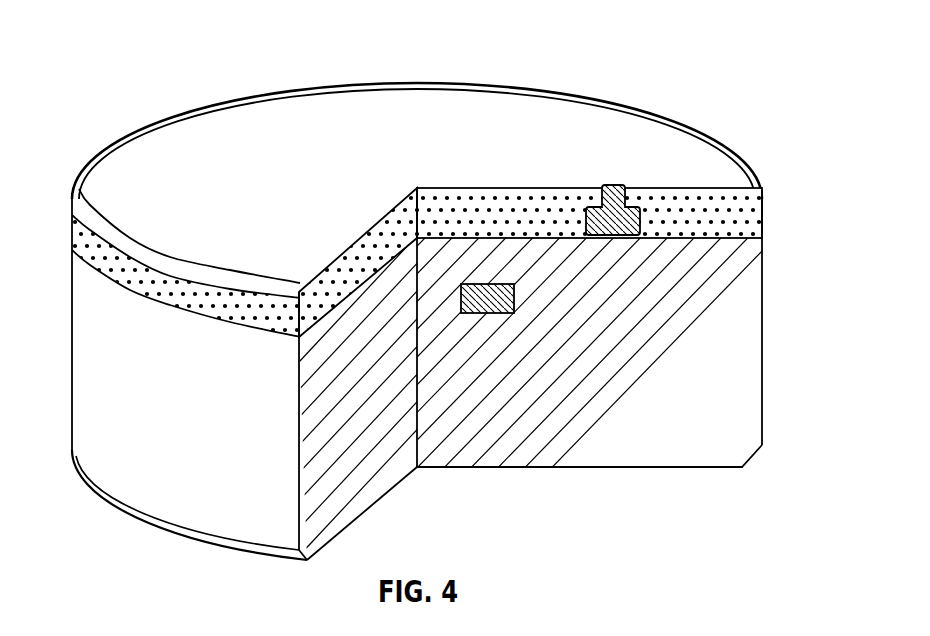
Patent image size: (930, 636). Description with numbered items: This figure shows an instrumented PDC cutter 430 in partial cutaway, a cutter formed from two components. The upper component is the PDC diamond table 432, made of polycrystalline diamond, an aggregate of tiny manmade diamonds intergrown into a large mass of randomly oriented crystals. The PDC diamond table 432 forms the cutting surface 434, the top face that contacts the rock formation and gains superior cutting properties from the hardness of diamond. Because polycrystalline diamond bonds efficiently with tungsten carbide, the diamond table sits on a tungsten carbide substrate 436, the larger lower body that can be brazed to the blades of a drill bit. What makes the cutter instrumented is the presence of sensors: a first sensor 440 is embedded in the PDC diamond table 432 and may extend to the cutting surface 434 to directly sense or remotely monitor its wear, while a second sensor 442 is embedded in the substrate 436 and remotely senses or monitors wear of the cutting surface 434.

The instrumented PDC cutter 430 is at (153, 80).
The PDC diamond table 432 is at (745, 215).
The cutting surface 434 is at (323, 118).
The substrate 436 is at (715, 393).
The first sensor 440 is at (628, 190).
The second sensor 442 is at (478, 314).